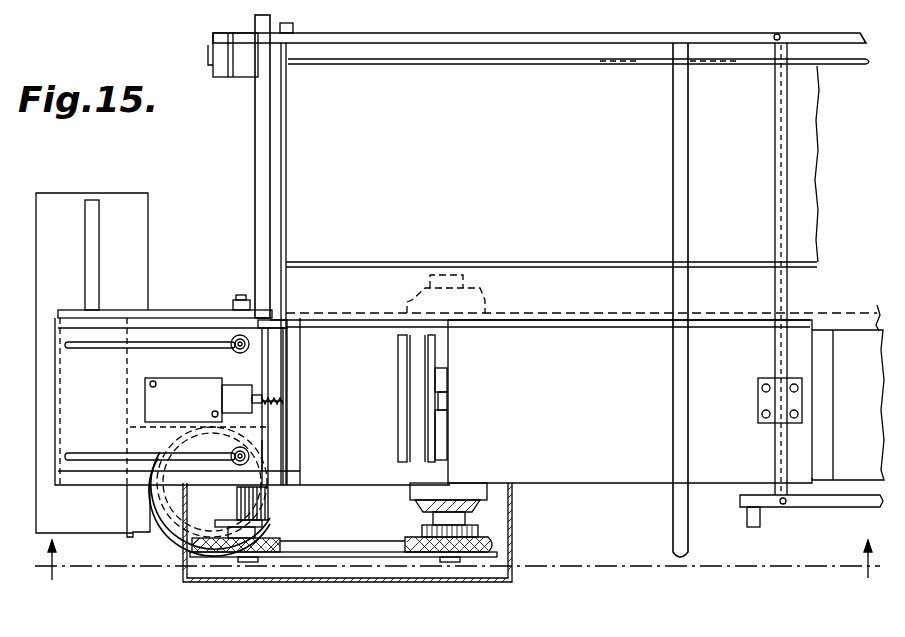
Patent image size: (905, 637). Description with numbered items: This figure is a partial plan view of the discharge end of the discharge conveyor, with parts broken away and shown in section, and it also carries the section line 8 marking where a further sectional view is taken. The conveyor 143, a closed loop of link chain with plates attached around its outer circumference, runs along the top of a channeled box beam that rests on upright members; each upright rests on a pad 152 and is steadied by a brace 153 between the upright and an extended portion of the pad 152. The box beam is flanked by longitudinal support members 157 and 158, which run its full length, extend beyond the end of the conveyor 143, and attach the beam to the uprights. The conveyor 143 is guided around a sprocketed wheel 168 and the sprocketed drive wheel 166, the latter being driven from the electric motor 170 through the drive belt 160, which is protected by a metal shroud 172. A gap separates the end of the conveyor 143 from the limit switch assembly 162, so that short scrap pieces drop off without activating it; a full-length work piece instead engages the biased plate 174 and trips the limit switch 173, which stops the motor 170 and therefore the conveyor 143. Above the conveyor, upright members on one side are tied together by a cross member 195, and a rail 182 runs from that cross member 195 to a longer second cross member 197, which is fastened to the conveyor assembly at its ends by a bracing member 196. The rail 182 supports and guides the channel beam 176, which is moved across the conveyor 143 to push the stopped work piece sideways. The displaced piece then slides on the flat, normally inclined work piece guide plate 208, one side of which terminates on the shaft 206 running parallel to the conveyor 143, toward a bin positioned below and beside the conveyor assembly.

The shaft 206 is at (212, 55).
The bracing member 196 is at (287, 62).
The second cross member 197 is at (426, 41).
The rail 182 is at (775, 167).
The work piece guide plate 208 is at (396, 198).
The brace 153 is at (92, 205).
The pad 152 is at (140, 250).
The longitudinal support member 158 is at (320, 322).
The limit switch assembly 162 is at (212, 378).
The limit switch 173 is at (262, 410).
The biased plate 174 is at (268, 452).
The conveyor 143 is at (397, 449).
The longitudinal support member 157 is at (320, 478).
The channel beam 176 is at (553, 455).
The cross member 195 is at (812, 503).
The electric motor 170 is at (172, 515).
The sprocketed wheel 168 is at (215, 560).
The drive belt 160 is at (316, 548).
The metal shroud 172 is at (410, 580).
The sprocketed drive wheel 166 is at (483, 553).
The section line 8 is at (457, 576).